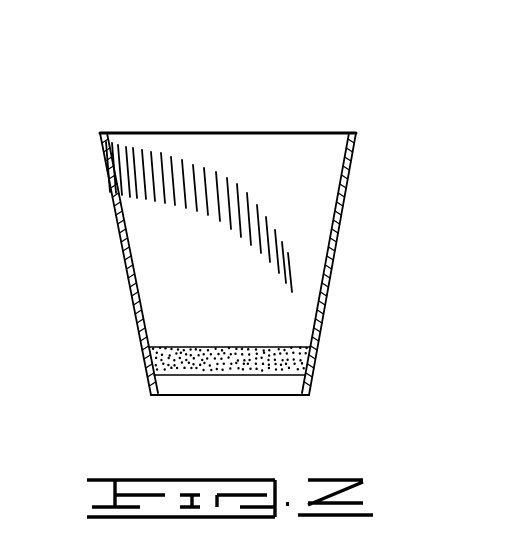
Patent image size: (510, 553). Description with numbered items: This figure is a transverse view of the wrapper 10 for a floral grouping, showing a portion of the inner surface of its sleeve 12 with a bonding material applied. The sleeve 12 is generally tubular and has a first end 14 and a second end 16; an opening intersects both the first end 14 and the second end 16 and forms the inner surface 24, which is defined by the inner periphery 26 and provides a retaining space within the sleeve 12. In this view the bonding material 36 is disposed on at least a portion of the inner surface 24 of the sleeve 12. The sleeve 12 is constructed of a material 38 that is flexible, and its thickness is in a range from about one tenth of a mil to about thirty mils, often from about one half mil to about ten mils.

The wrapper 10 is at (206, 42).
The sleeve 12 is at (307, 117).
The first end 14 is at (115, 133).
The second end 16 is at (185, 397).
The inner surface 24 is at (165, 143).
The inner periphery 26 is at (140, 235).
The bonding material 36 is at (170, 357).
The material 38 is at (312, 220).